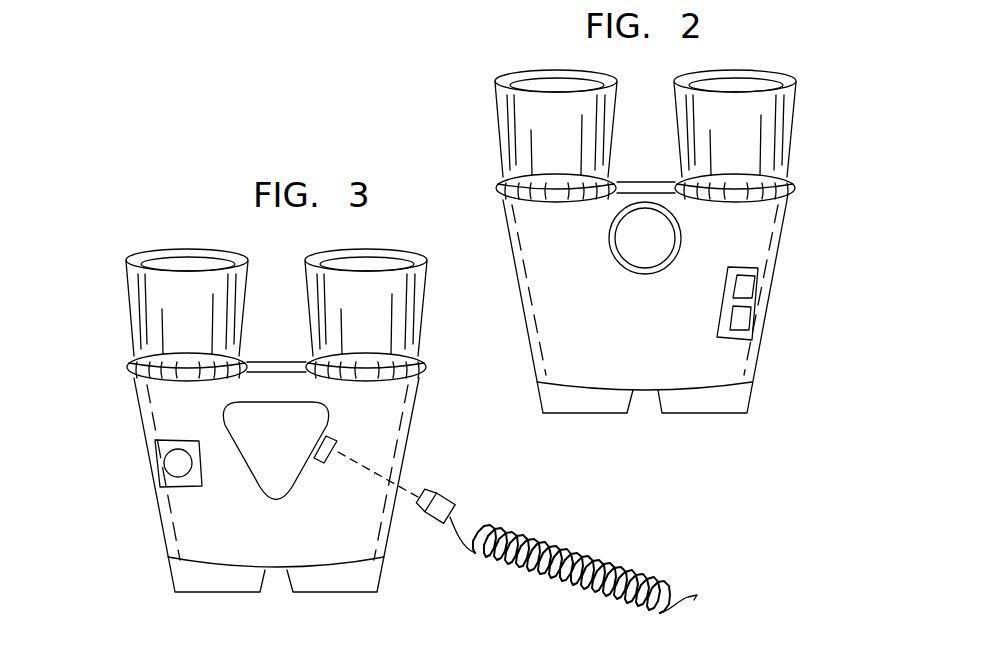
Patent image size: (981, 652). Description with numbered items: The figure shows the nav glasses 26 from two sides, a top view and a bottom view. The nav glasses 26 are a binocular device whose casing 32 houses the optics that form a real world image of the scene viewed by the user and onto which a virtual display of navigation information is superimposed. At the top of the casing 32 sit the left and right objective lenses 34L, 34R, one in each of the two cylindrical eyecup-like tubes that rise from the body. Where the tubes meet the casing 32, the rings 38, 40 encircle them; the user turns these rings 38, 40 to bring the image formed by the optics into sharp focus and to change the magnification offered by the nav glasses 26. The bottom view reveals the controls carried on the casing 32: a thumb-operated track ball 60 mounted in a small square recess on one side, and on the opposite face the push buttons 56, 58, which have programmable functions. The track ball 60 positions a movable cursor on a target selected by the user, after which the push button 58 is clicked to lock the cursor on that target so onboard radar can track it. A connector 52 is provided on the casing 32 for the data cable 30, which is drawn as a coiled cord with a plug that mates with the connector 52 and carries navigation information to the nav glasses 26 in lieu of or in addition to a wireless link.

In FIG. 2, the nav glasses 26 is at (658, 230).
In FIG. 3, the nav glasses 26 is at (365, 420).
In FIG. 3, the data cable 30 is at (538, 528).
In FIG. 2, the casing 32 is at (783, 274).
In FIG. 3, the casing 32 is at (128, 412).
In FIG. 2, the left objective lens 34L is at (548, 86).
In FIG. 3, the left objective lens 34L is at (373, 265).
In FIG. 2, the right objective lens 34R is at (742, 86).
In FIG. 3, the right objective lens 34R is at (181, 265).
In FIG. 2, the ring 38 is at (498, 181).
In FIG. 3, the ring 38 is at (426, 360).
In FIG. 2, the ring 40 is at (796, 181).
In FIG. 3, the ring 40 is at (130, 361).
In FIG. 3, the connector 52 is at (337, 441).
In FIG. 2, the push button 56 is at (751, 292).
In FIG. 2, the push button 58 is at (749, 327).
In FIG. 3, the thumb-operated track ball 60 is at (150, 467).